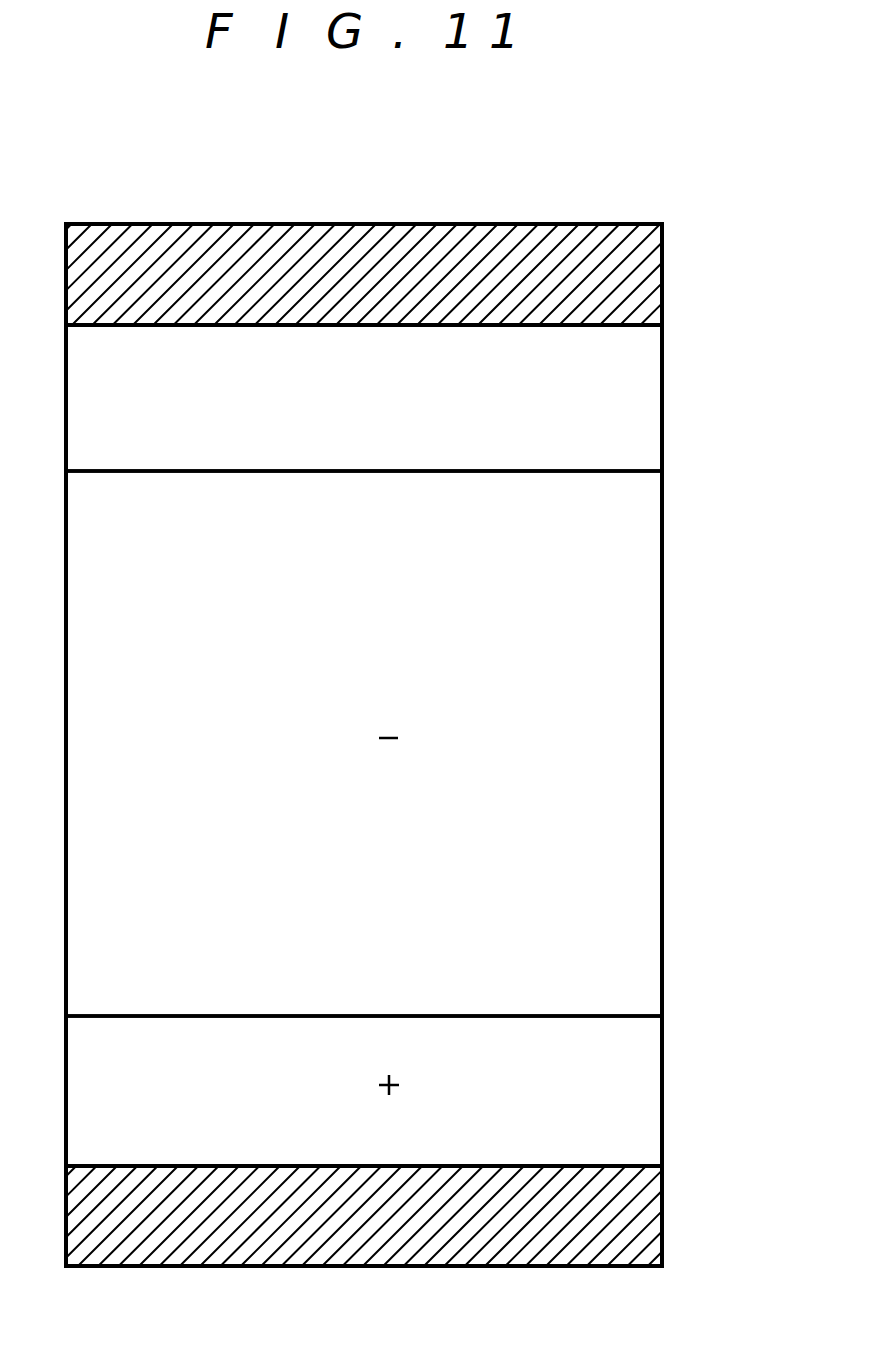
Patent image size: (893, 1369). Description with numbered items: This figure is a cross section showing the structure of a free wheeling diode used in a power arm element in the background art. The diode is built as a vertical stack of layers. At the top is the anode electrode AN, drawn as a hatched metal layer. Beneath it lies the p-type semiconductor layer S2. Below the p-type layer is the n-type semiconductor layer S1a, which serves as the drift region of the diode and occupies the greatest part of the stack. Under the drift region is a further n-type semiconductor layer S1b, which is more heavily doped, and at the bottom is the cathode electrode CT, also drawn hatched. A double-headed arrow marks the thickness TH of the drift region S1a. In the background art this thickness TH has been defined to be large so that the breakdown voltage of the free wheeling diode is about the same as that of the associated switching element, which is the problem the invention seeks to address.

The anode electrode AN is at (650, 272).
The p-type semiconductor layer S2 is at (648, 397).
The n-type semiconductor layer (drift region) S1a is at (648, 744).
The n-type semiconductor layer S1b is at (650, 1090).
The cathode electrode CT is at (652, 1215).
The thickness of the drift region TH is at (117, 520).